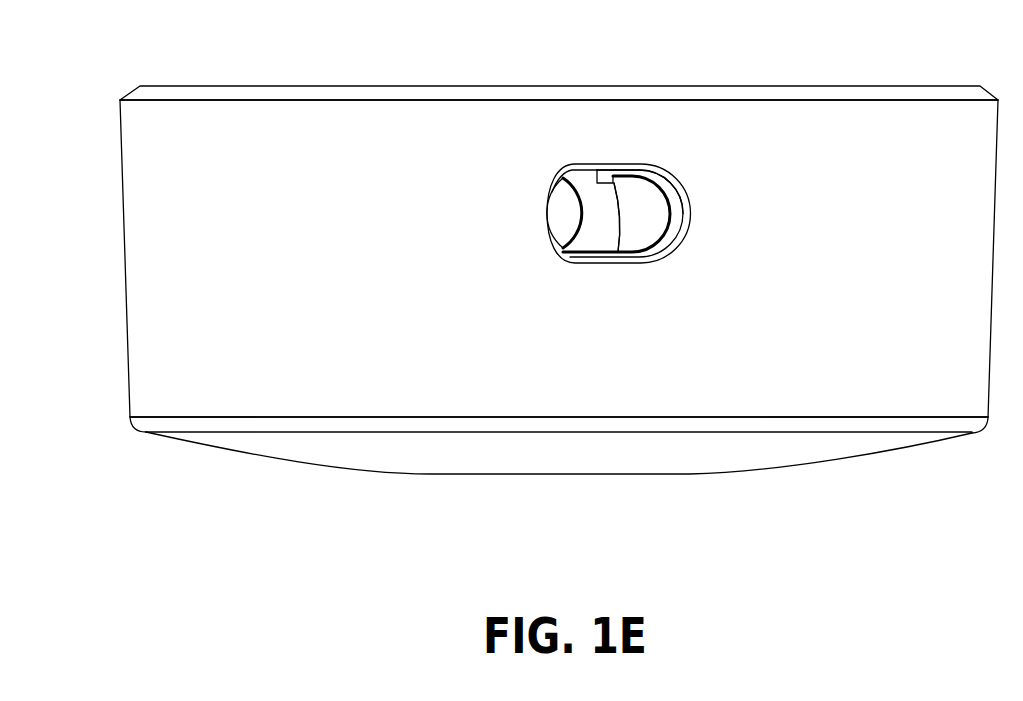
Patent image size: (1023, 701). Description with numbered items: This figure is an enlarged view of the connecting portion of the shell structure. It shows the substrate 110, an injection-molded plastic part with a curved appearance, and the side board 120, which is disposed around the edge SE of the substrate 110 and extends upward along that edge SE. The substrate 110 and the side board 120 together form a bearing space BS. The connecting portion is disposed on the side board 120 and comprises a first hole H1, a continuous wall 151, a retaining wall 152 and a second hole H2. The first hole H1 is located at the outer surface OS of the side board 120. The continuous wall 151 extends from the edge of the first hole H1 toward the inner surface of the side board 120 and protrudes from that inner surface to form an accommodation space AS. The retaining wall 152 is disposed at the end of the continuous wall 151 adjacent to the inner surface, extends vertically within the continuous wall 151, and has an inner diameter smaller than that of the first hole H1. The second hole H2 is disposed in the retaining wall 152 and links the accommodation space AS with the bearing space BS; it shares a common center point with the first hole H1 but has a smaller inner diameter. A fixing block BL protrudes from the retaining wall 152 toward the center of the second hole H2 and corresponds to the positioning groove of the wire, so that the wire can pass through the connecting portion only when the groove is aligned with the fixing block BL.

The substrate 110 is at (468, 457).
The side board 120 is at (163, 280).
The continuous wall 151 is at (680, 192).
The retaining wall 152 is at (633, 168).
The first hole H1 is at (555, 170).
The second hole H2 is at (658, 227).
The fixing block BL is at (603, 170).
The bearing space BS is at (594, 238).
The accommodation space AS is at (690, 222).
The outer surface OS is at (816, 154).
The edge SE is at (329, 422).